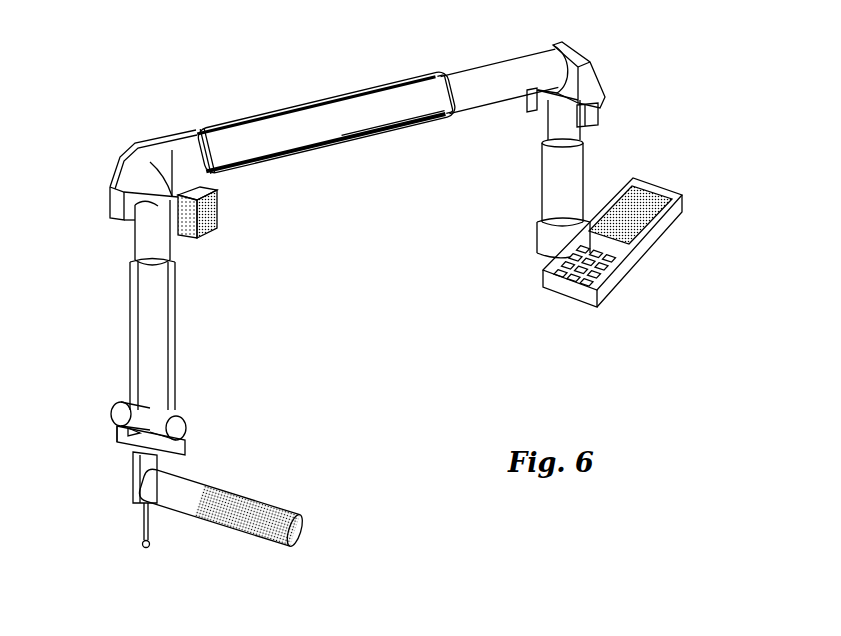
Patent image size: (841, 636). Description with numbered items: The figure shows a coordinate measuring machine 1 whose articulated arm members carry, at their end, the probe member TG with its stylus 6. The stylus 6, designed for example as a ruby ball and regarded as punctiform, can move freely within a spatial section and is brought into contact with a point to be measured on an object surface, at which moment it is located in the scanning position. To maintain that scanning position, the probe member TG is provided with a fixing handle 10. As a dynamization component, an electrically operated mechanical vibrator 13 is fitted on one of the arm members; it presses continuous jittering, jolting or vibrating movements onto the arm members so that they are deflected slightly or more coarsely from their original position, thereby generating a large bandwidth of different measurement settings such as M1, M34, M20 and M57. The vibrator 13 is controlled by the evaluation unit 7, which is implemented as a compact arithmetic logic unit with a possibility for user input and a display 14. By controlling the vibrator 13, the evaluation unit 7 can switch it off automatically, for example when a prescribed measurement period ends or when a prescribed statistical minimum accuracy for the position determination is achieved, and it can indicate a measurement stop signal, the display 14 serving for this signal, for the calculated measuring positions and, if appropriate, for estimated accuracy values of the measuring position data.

The measuring apparatus 1 is at (336, 300).
The measurement setting M34 is at (326, 105).
The measurement setting M57 is at (325, 160).
The measurement setting M20 is at (460, 123).
The measurement setting M1 is at (408, 144).
The mechanical vibrator 13 is at (241, 241).
The display 14 is at (639, 190).
The evaluation unit 7 is at (597, 256).
The fixing handle 10 is at (231, 504).
The probe member TG is at (96, 478).
The stylus 6 is at (106, 544).